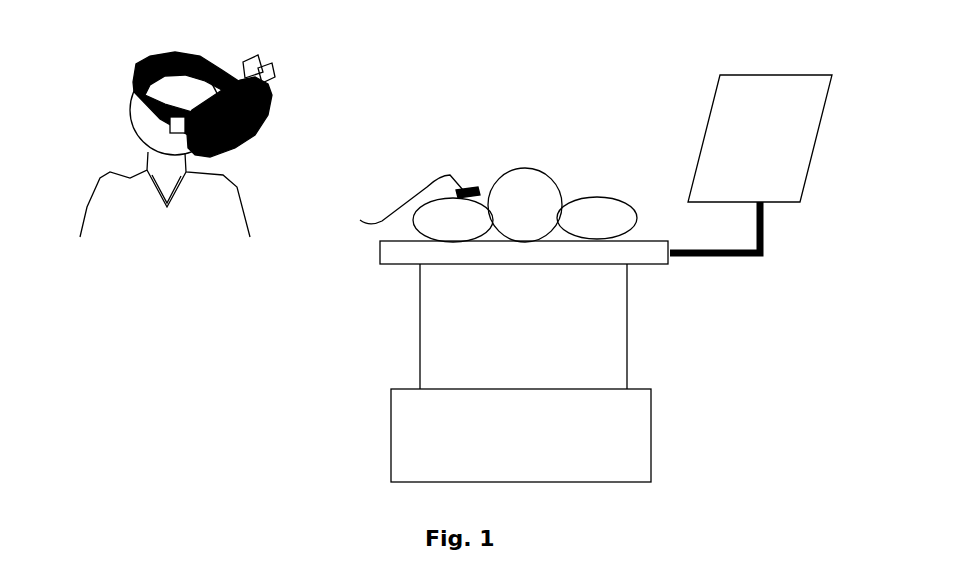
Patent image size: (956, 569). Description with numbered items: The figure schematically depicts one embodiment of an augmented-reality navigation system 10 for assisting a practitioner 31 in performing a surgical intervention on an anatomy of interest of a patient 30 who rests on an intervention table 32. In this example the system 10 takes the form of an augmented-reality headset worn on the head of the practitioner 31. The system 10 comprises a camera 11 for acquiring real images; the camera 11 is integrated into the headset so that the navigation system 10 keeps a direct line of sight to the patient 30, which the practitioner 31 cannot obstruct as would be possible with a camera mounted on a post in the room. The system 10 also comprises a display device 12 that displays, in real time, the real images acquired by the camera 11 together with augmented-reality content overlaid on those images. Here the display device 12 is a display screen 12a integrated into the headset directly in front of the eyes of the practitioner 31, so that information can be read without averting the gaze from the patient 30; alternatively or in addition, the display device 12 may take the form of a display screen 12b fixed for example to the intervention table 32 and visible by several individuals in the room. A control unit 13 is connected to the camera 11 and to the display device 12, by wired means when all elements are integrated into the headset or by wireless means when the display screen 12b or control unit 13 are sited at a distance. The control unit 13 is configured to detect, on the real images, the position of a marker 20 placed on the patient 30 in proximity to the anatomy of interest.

The augmented-reality navigation system 10 is at (313, 93).
The camera 11 is at (263, 60).
The display device 12 is at (431, 134).
The display screen 12a is at (253, 138).
The display screen 12b is at (760, 75).
The control unit 13 is at (155, 135).
The marker 20 is at (407, 202).
The patient 30 is at (593, 197).
The practitioner 31 is at (85, 222).
The intervention table 32 is at (385, 265).